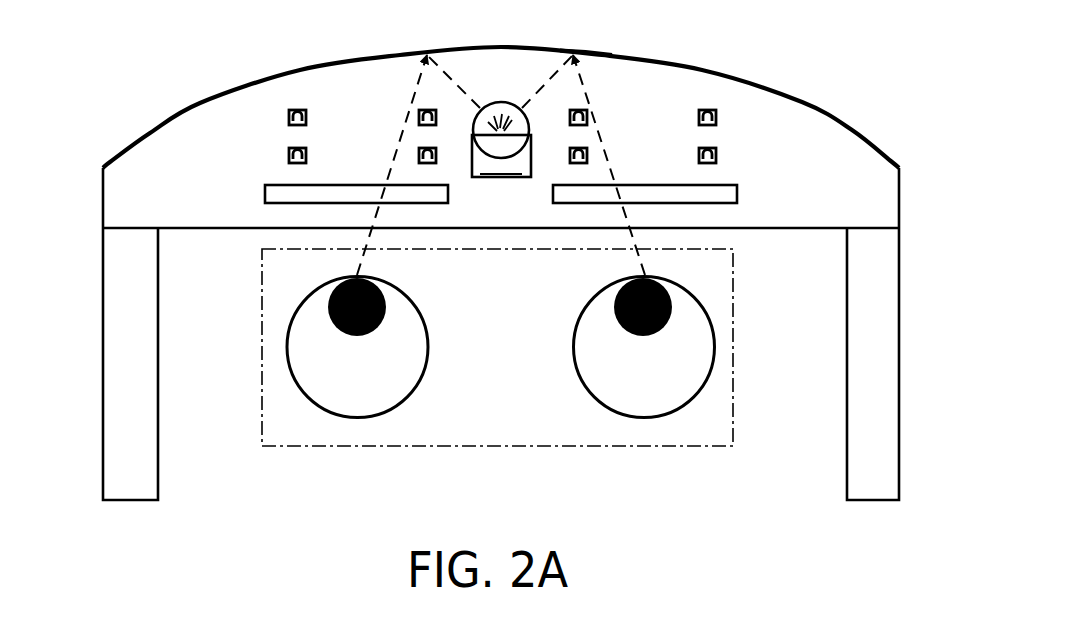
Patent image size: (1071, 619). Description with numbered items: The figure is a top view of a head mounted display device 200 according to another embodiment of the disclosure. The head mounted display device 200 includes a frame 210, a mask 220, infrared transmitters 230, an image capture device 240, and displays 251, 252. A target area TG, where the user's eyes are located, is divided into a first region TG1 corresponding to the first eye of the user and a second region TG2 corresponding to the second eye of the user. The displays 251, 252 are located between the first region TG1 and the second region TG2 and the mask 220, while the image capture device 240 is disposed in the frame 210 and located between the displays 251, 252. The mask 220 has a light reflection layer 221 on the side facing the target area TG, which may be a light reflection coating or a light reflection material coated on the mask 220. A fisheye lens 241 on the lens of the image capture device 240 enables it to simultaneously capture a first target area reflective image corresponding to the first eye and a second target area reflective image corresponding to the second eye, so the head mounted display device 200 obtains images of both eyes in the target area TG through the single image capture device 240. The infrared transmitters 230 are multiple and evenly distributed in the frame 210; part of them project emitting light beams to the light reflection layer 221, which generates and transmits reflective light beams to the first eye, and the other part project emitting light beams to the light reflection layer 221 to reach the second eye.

The head mounted display device 200 is at (958, 538).
The frame 210 is at (104, 202).
The mask 220 is at (753, 83).
The light reflection layer 221 is at (612, 58).
The infrared transmitter 230 is at (287, 152).
The image capture device 240 is at (497, 180).
The fisheye lens 241 is at (501, 108).
The display 251 is at (265, 192).
The display 252 is at (737, 193).
The target area TG is at (691, 447).
The first region TG1 is at (297, 400).
The second region TG2 is at (587, 400).